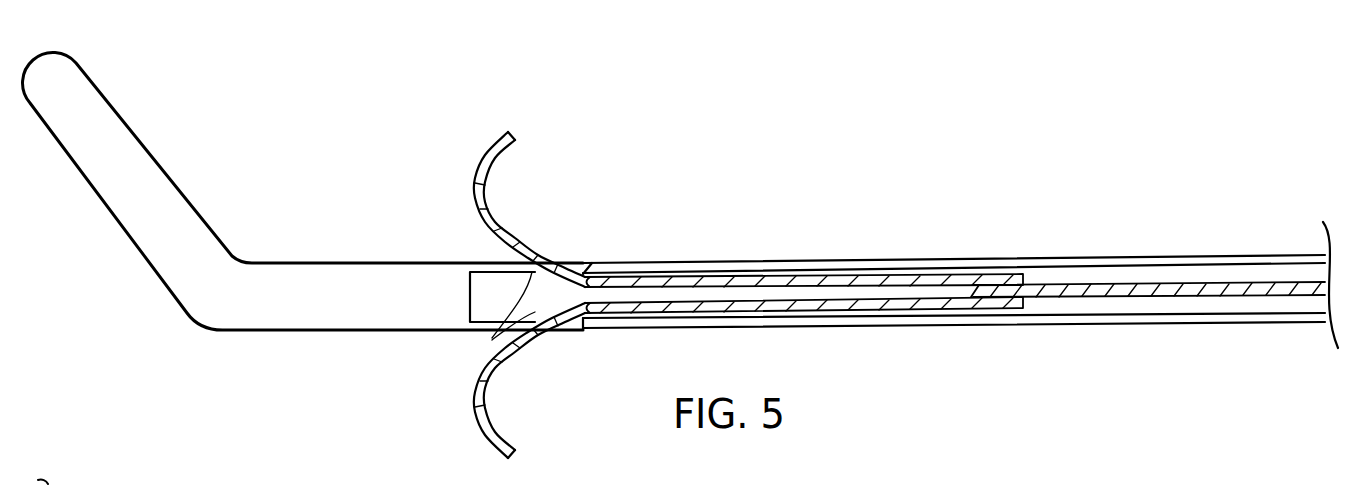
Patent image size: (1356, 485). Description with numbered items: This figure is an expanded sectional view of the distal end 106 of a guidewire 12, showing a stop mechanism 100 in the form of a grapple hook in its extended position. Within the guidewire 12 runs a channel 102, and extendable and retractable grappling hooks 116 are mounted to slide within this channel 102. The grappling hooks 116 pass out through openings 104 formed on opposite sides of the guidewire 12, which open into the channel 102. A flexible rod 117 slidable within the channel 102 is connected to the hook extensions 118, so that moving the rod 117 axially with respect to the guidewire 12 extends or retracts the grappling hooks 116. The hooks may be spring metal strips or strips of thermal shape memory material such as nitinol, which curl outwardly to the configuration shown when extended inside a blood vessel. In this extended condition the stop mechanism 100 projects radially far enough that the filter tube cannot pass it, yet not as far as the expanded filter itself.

The guidewire 12 is at (948, 258).
The stop mechanism 100 is at (610, 237).
The channel 102 is at (1149, 272).
The openings 104 is at (492, 338).
The distal end 106 is at (148, 168).
The grappling hooks 116 is at (520, 241).
The flexible rod 117 is at (1100, 300).
The hook extensions 118 is at (780, 275).